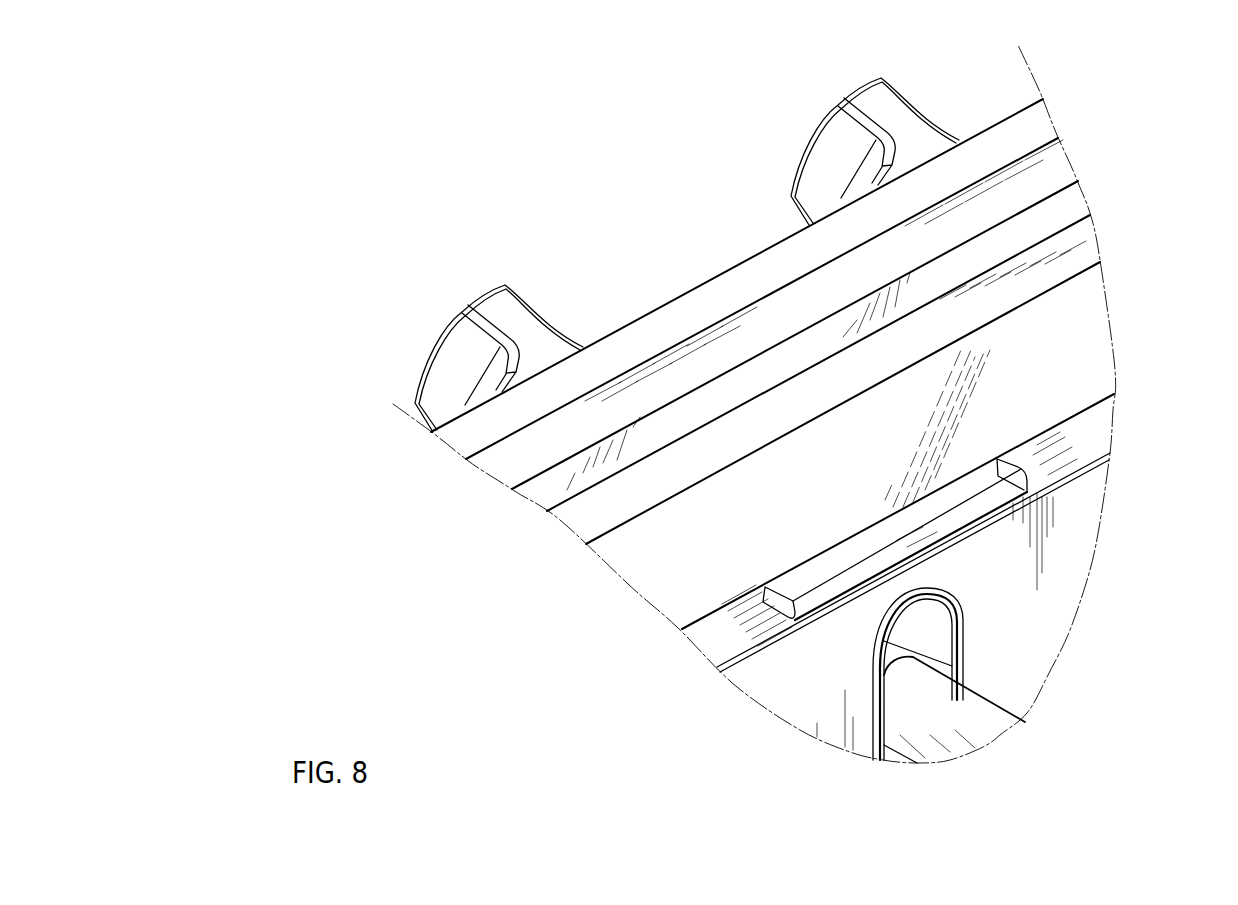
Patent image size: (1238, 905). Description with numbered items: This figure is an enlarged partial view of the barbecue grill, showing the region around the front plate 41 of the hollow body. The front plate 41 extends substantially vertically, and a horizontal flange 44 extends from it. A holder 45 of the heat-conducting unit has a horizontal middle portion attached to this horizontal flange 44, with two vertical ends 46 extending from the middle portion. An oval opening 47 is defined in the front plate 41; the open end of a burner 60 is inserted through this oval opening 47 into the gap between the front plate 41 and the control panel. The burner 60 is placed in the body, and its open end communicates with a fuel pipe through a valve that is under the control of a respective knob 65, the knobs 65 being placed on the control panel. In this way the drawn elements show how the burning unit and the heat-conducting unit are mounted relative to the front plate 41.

The front plate 41 is at (738, 340).
The flange 44 is at (1090, 442).
The holder 45 is at (967, 503).
The vertical end 46 is at (765, 608).
The oval opening 47 is at (943, 638).
The burner 60 is at (982, 722).
The knob 65 is at (502, 320).